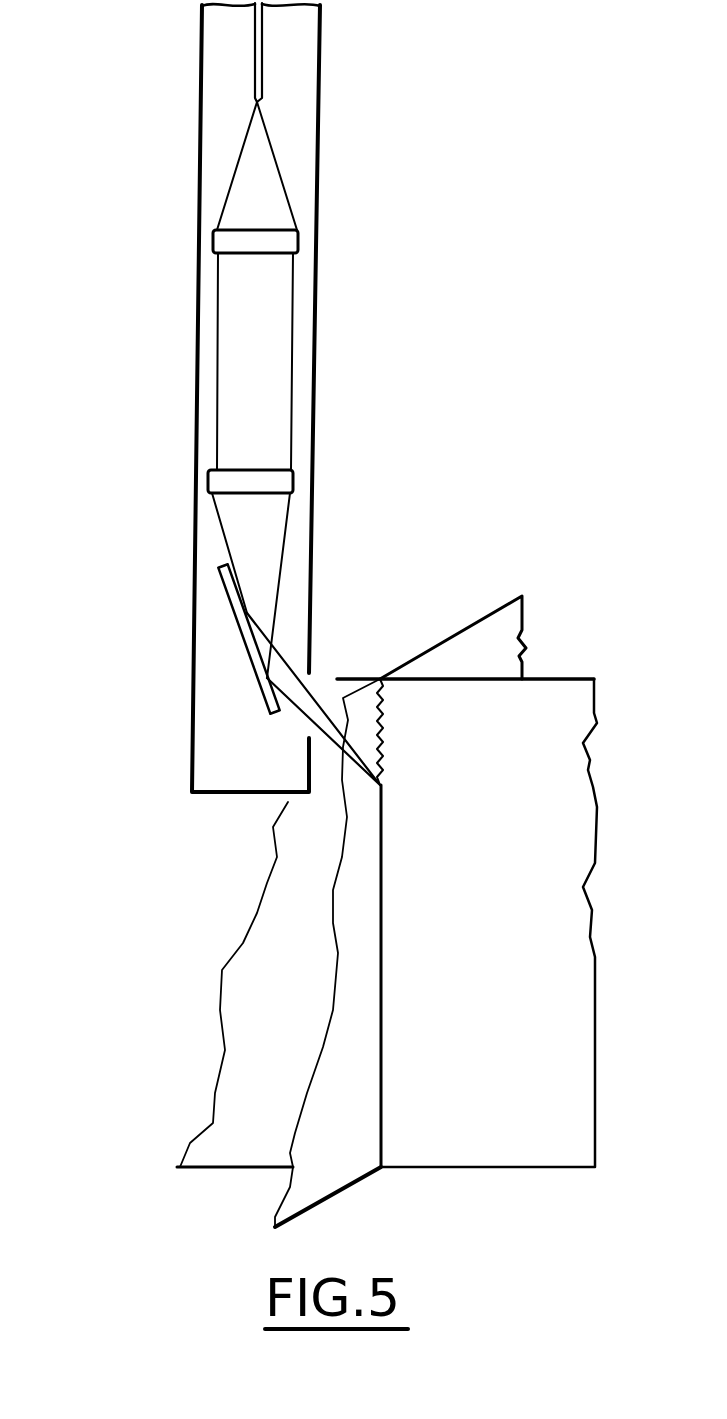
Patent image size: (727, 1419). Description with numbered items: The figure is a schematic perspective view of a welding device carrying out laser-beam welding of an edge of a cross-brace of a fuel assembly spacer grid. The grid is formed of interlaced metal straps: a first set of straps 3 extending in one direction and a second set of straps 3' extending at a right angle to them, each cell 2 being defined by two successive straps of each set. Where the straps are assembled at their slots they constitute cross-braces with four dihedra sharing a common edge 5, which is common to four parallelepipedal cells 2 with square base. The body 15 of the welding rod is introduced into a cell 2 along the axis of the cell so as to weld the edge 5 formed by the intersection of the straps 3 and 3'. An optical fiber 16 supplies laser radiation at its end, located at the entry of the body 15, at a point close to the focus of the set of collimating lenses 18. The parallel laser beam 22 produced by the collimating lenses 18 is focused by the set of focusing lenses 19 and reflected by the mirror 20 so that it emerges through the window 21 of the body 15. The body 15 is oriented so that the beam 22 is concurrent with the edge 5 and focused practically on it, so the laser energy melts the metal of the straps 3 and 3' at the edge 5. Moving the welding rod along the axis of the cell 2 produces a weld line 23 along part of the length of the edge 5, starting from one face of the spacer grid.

The body of the welding rod 15 is at (140, 388).
The optical fiber 16 is at (263, 62).
The set of collimating lenses 18 is at (298, 244).
The parallel laser beam 22 is at (291, 365).
The set of focusing lenses 19 is at (293, 480).
The mirror 20 is at (262, 680).
The window 21 is at (313, 680).
The weld line 23 is at (383, 740).
The straps of the first set 3 is at (496, 703).
The straps of the second set 3' is at (482, 637).
The cell 2 is at (503, 1053).
The edge 5 is at (382, 922).